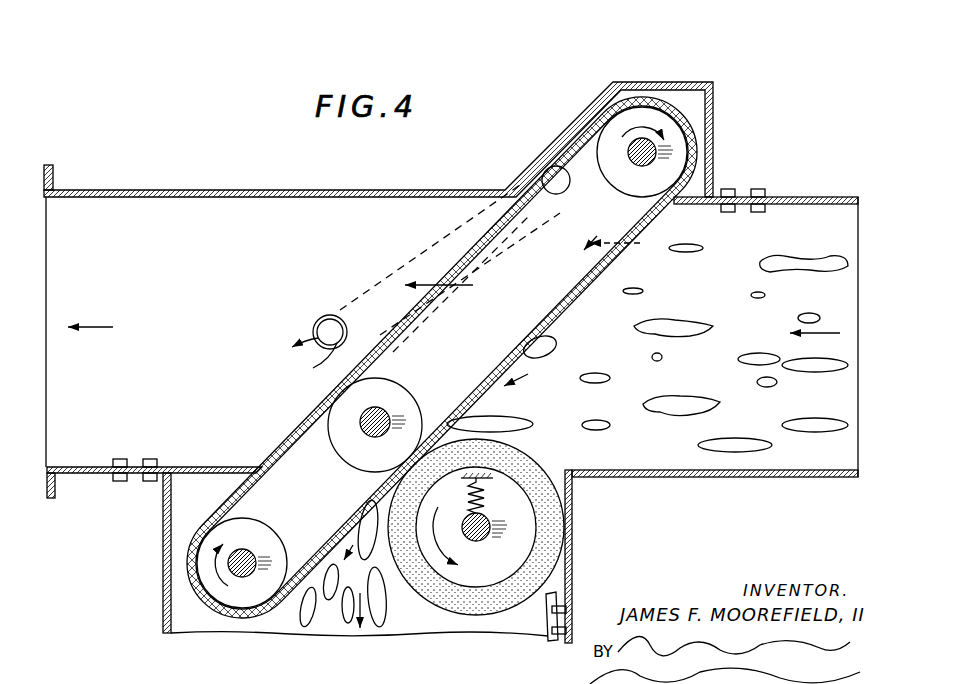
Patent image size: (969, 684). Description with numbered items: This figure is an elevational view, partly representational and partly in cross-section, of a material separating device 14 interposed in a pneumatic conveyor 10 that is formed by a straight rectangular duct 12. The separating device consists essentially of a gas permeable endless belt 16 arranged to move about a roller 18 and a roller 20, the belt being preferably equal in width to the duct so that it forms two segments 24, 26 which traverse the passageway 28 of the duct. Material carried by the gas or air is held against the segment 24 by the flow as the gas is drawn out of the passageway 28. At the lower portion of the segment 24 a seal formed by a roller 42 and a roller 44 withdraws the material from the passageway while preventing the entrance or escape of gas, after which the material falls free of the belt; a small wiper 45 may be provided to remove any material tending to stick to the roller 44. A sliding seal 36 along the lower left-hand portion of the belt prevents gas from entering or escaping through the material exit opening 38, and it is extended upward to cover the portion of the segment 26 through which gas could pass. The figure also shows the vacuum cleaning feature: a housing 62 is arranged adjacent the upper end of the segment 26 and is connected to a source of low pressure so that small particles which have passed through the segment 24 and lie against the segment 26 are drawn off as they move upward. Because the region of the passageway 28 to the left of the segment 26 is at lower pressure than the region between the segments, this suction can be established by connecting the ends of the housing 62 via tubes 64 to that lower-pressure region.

The pneumatic conveyor 10 is at (798, 157).
The duct 12 is at (818, 197).
The material separating device 14 is at (649, 77).
The endless belt 16 is at (672, 114).
The roller 18 is at (626, 186).
The roller 20 is at (253, 546).
The segment 24 is at (638, 226).
The segment 26 is at (386, 347).
The passageway 28 is at (278, 288).
The seal 36 is at (217, 445).
The material exit opening 38 is at (427, 632).
The roller 42 is at (380, 470).
The roller 44 is at (486, 585).
The wiper 45 is at (549, 591).
The housing 62 is at (561, 198).
The tubes 64 is at (388, 277).